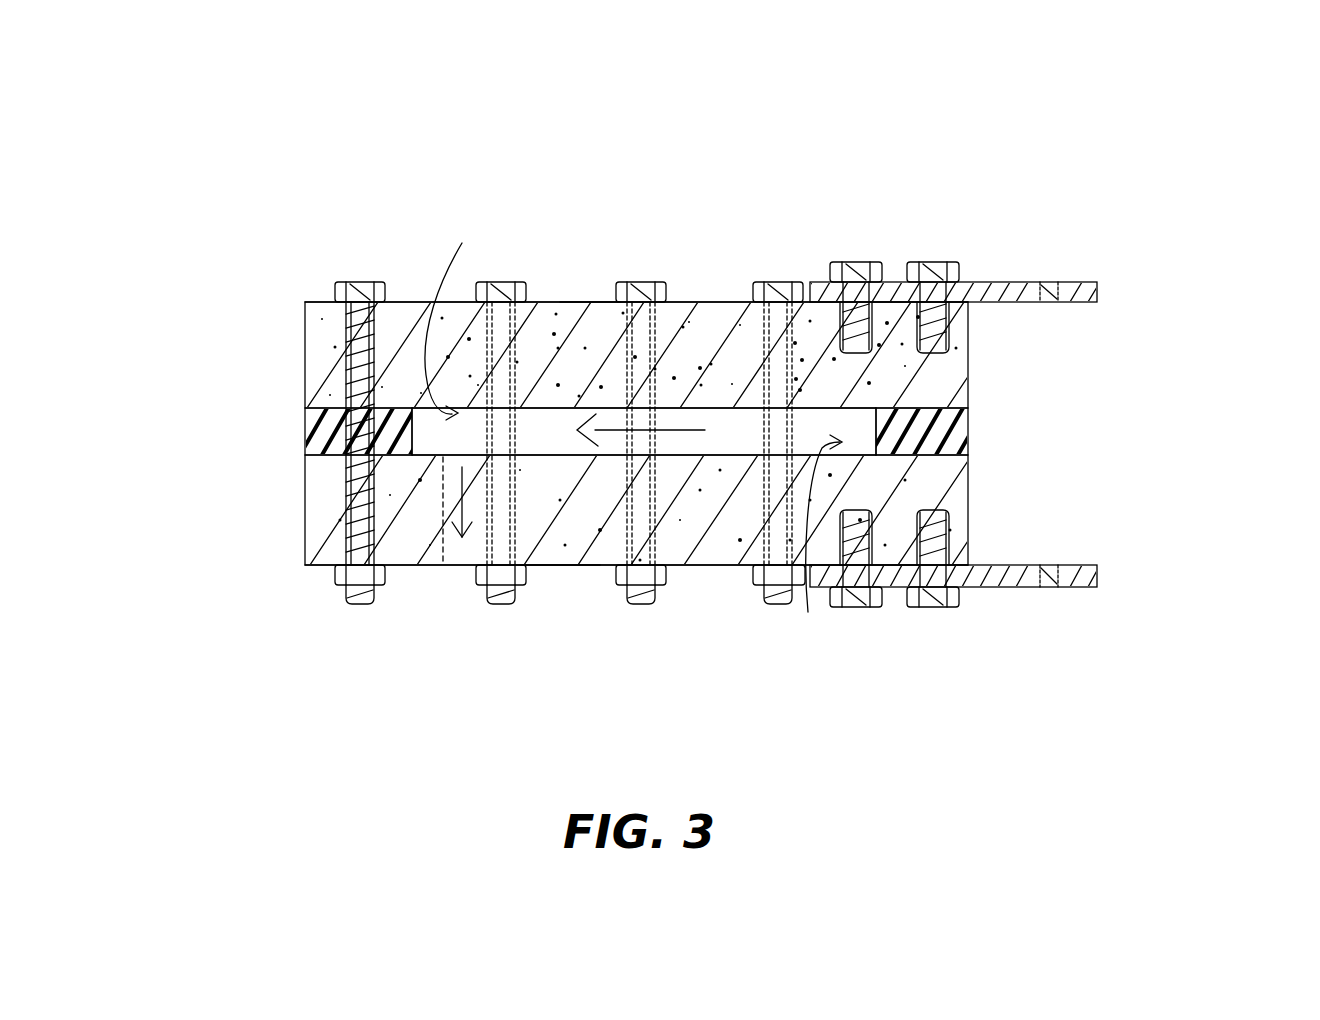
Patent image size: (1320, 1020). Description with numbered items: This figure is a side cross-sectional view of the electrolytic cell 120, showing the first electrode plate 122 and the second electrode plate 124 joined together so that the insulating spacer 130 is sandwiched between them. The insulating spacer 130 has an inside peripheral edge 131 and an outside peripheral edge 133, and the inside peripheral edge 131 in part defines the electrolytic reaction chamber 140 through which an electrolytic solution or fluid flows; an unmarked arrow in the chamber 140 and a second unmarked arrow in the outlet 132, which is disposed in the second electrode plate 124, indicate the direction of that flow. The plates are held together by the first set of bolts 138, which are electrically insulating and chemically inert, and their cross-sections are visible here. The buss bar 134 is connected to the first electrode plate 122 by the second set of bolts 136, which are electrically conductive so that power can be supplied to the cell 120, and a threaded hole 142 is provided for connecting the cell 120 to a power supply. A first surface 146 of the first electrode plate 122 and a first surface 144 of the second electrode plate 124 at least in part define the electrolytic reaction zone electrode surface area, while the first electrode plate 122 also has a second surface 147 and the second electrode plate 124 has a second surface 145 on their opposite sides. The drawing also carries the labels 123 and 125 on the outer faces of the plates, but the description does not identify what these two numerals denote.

The electrolytic cell 120 is at (1185, 138).
The first electrode plate 122 is at (312, 316).
The outer surface of first plate 123 is at (305, 355).
The second electrode plate 124 is at (705, 560).
The outer surface of second plate 125 is at (305, 518).
The insulating spacer 130 is at (306, 437).
The inside peripheral edge 131 is at (412, 428).
The outlet 132 is at (467, 553).
The outside peripheral edge 133 is at (305, 425).
The buss bar 134 is at (1073, 283).
The second set of bolts 136 is at (857, 264).
The first set of bolts 138 is at (366, 290).
The electrolytic reaction chamber 140 is at (540, 442).
The hole 142 is at (1056, 305).
The first surface of second electrode plate 144 is at (808, 592).
The second surface of second electrode plate 145 is at (552, 565).
The first surface of first electrode plate 146 is at (464, 324).
The second surface of first electrode plate 147 is at (585, 300).